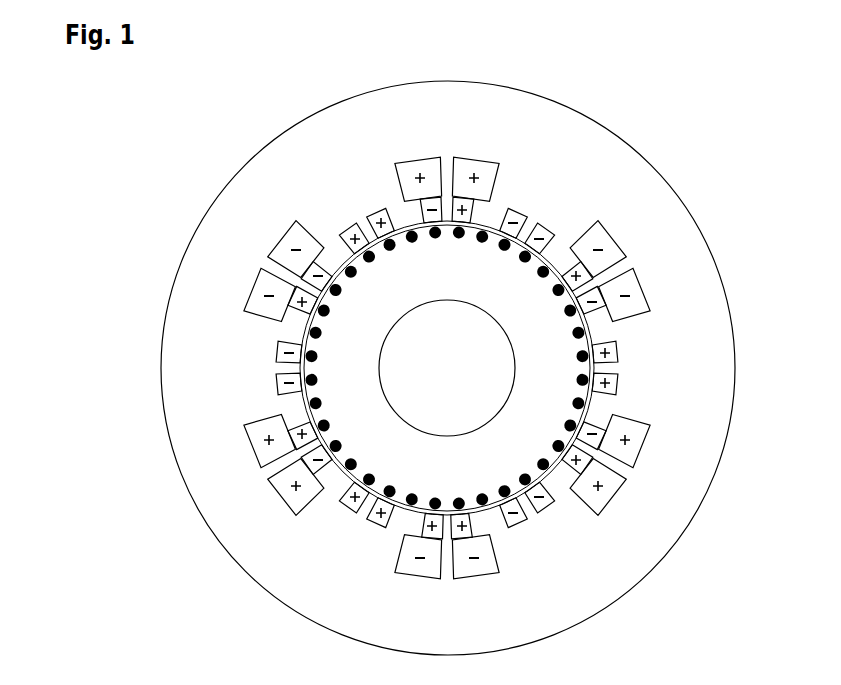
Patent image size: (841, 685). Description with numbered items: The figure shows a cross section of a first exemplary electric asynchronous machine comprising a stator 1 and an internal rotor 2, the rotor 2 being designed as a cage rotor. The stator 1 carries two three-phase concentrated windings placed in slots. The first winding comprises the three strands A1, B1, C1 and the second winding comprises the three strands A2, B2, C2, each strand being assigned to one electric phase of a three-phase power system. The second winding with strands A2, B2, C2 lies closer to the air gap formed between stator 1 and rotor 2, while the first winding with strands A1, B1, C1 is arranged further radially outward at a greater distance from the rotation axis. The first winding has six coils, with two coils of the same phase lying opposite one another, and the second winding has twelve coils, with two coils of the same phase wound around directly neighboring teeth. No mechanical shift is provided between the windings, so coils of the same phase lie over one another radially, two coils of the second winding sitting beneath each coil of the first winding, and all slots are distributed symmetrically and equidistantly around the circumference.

The stator 1 is at (594, 157).
The rotor 2 is at (455, 284).
The first winding strand A1 is at (446, 368).
The first winding strand B1 is at (447, 381).
The first winding strand C1 is at (447, 356).
The second winding strand A2 is at (446, 367).
The second winding strand B2 is at (447, 368).
The second winding strand C2 is at (447, 368).